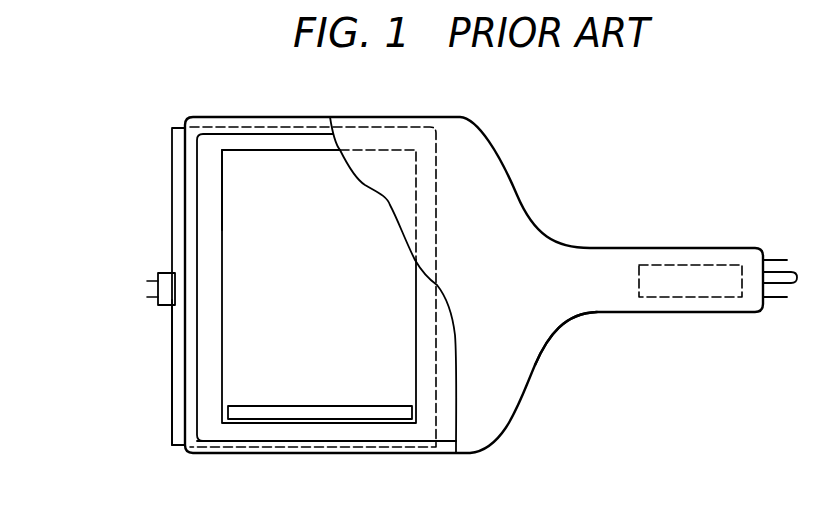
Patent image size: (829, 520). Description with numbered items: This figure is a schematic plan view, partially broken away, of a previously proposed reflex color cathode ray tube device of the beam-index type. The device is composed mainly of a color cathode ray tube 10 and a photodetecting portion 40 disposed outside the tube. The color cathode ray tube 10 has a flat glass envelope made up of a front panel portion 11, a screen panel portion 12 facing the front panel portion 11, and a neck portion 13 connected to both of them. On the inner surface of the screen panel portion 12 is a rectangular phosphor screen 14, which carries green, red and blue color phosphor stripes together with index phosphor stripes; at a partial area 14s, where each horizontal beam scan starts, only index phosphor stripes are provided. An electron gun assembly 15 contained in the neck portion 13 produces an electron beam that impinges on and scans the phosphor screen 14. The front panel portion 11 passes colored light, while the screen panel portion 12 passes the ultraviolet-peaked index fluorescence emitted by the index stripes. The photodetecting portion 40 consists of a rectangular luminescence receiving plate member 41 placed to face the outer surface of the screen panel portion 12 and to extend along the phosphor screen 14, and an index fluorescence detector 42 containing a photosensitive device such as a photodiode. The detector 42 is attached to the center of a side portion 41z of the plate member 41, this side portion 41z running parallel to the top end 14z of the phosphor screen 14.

The color cathode ray tube 10 is at (548, 208).
The front panel portion 11 is at (366, 158).
The screen panel portion 12 is at (396, 430).
The neck portion 13 is at (555, 333).
The phosphor screen 14 is at (259, 165).
The partial area of the phosphor screen 14s is at (283, 422).
The top end of the phosphor screen 14z is at (222, 192).
The electron gun assembly 15 is at (684, 298).
The photodetecting portion 40 is at (166, 254).
The luminescence receiving plate member 41 is at (333, 448).
The side portion of the luminescence receiving plate member 41z is at (175, 350).
The index fluorescence detector 42 is at (158, 288).